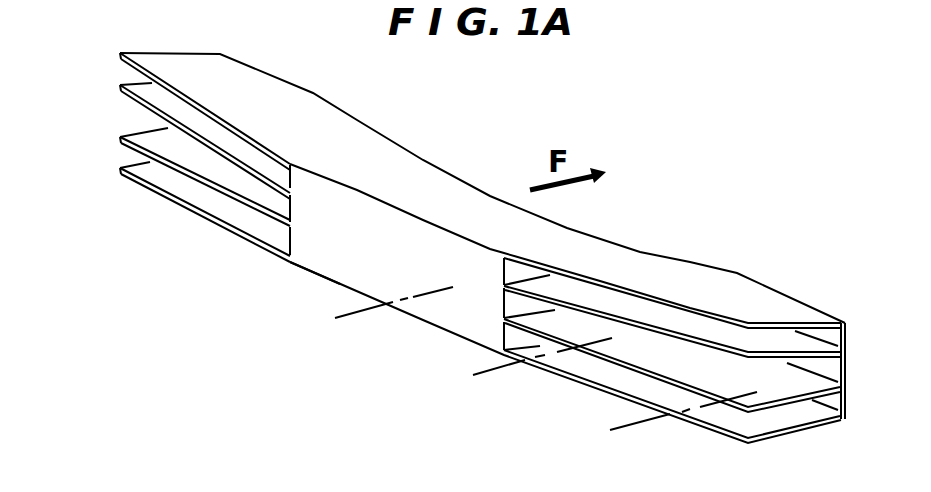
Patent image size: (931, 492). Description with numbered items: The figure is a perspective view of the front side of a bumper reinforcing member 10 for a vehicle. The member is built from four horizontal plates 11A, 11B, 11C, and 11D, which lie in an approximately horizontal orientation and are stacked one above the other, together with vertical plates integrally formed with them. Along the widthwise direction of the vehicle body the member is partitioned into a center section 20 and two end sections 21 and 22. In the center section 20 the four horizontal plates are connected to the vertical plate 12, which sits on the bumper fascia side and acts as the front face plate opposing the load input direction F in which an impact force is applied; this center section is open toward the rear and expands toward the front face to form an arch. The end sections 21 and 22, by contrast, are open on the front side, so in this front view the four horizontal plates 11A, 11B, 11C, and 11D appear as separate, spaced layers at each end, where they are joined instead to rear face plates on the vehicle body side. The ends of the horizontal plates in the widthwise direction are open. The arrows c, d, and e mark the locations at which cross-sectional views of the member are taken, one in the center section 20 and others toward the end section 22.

The bumper reinforcing member 10 is at (678, 251).
The horizontal plate 11A is at (248, 65).
The horizontal plate 11B is at (124, 93).
The horizontal plate 11C is at (131, 130).
The horizontal plate 11D is at (147, 177).
The vertical plate 12 is at (318, 252).
The center section 20 is at (377, 335).
The end section 21 is at (198, 237).
The end section 22 is at (548, 395).
The arrow c is at (335, 318).
The arrow d is at (473, 375).
The arrow e is at (610, 430).